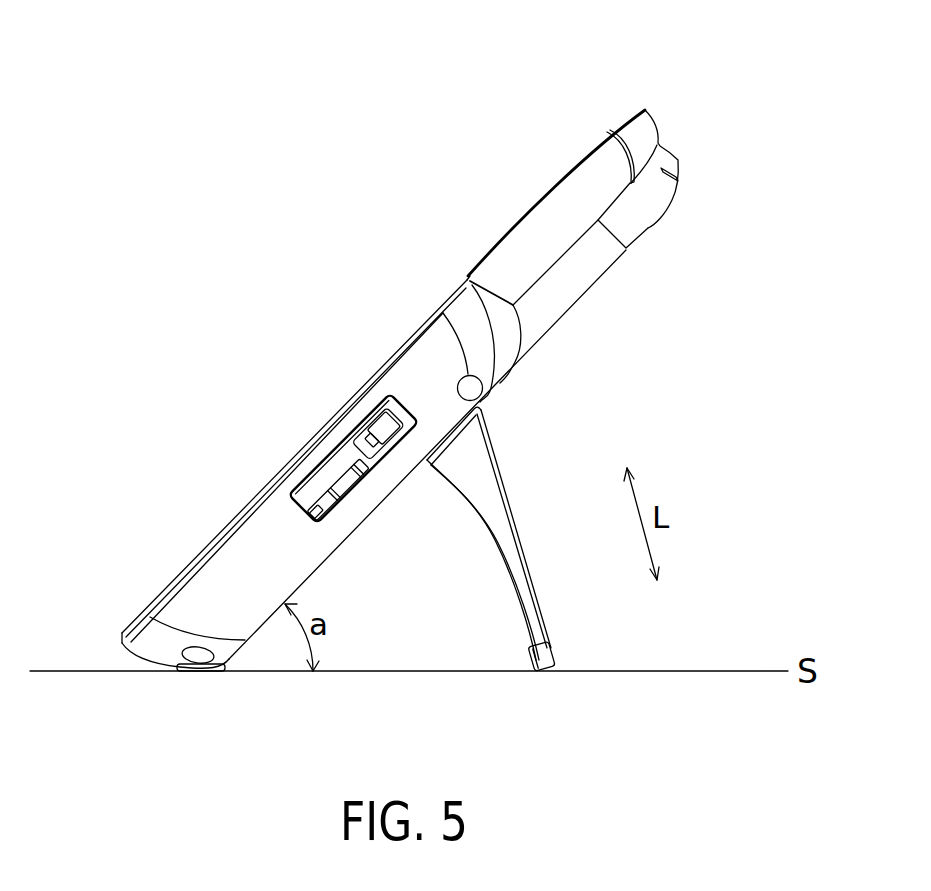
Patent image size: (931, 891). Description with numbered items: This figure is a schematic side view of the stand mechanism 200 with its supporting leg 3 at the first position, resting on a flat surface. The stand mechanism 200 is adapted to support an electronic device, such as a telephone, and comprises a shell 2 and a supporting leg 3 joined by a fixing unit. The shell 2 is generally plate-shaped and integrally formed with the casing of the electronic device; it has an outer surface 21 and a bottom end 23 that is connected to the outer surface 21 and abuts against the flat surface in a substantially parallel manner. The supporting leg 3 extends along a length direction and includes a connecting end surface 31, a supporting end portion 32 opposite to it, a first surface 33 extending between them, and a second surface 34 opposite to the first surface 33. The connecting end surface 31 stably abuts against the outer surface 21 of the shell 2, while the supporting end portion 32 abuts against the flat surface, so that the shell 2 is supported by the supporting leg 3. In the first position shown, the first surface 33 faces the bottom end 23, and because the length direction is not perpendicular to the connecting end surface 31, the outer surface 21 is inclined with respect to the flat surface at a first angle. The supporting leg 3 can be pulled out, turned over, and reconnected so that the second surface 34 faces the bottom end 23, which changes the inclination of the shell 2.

The stand mechanism 200 is at (410, 148).
The shell 2 is at (263, 472).
The outer surface 21 is at (371, 518).
The bottom end 23 is at (213, 673).
The supporting leg 3 is at (541, 547).
The connecting end surface 31 is at (396, 367).
The supporting end portion 32 is at (553, 655).
The first surface 33 is at (502, 561).
The second surface 34 is at (503, 490).